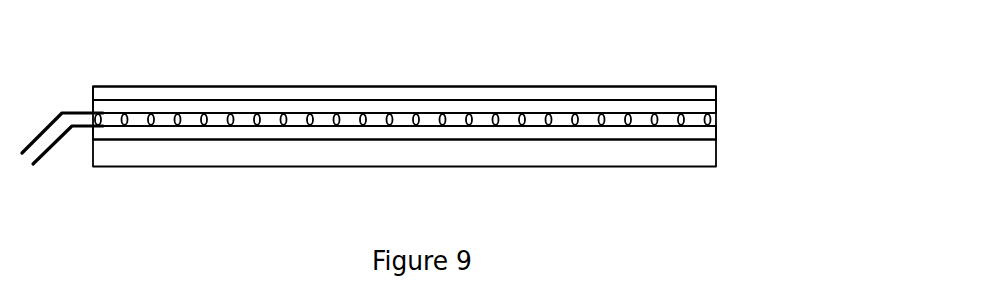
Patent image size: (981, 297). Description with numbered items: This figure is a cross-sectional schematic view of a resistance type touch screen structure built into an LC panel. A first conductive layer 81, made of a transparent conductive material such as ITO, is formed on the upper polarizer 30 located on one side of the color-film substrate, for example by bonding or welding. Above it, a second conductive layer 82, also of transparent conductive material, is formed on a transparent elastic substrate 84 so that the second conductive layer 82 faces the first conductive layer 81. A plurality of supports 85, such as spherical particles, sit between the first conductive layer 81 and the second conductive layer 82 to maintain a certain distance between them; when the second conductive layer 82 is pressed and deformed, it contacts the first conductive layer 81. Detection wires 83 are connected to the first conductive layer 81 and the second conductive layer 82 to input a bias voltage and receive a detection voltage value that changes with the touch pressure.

The upper polarizer 30 is at (707, 153).
The first conductive layer 81 is at (705, 134).
The second conductive layer 82 is at (705, 106).
The detection wires 83 is at (42, 153).
The transparent elastic substrate 84 is at (705, 92).
The supports 85 is at (523, 114).